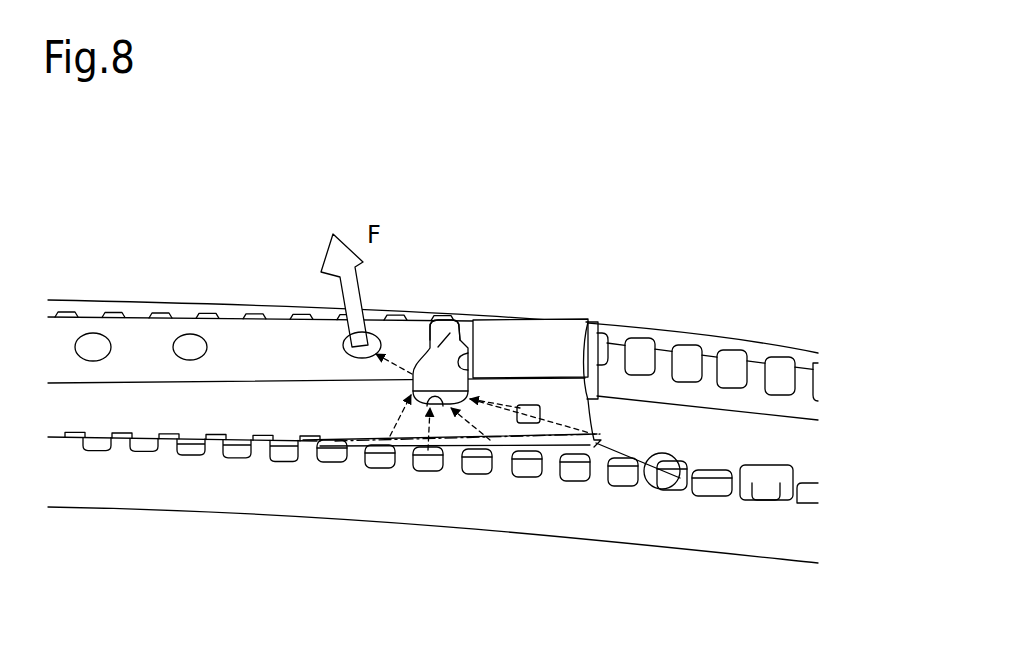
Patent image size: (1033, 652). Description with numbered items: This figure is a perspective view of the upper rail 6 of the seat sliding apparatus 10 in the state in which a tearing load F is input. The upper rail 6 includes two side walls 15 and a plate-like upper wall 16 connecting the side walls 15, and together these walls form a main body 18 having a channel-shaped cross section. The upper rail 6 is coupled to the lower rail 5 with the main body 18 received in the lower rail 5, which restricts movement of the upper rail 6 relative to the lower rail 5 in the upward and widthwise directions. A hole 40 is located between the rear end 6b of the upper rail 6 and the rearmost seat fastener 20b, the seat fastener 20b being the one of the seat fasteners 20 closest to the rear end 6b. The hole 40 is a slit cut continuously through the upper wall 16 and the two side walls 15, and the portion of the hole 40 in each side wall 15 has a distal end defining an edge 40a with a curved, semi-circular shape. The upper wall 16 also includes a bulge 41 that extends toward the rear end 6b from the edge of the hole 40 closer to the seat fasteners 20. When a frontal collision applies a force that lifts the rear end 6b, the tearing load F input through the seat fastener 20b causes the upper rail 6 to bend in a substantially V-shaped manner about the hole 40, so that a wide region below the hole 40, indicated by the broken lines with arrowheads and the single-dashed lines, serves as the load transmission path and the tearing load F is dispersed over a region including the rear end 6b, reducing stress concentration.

The lower rail 5 is at (772, 345).
The upper rail 6 is at (576, 368).
The rear end 6b is at (600, 325).
The seat sliding apparatus 10 is at (720, 166).
The side wall 15 is at (155, 410).
The upper wall 16 is at (141, 338).
The main body 18 is at (557, 320).
The seat fastener 20 is at (284, 312).
The rearmost seat fastener 20b is at (338, 337).
The hole 40 is at (483, 381).
The edge 40a is at (445, 407).
The bulge 41 is at (446, 328).